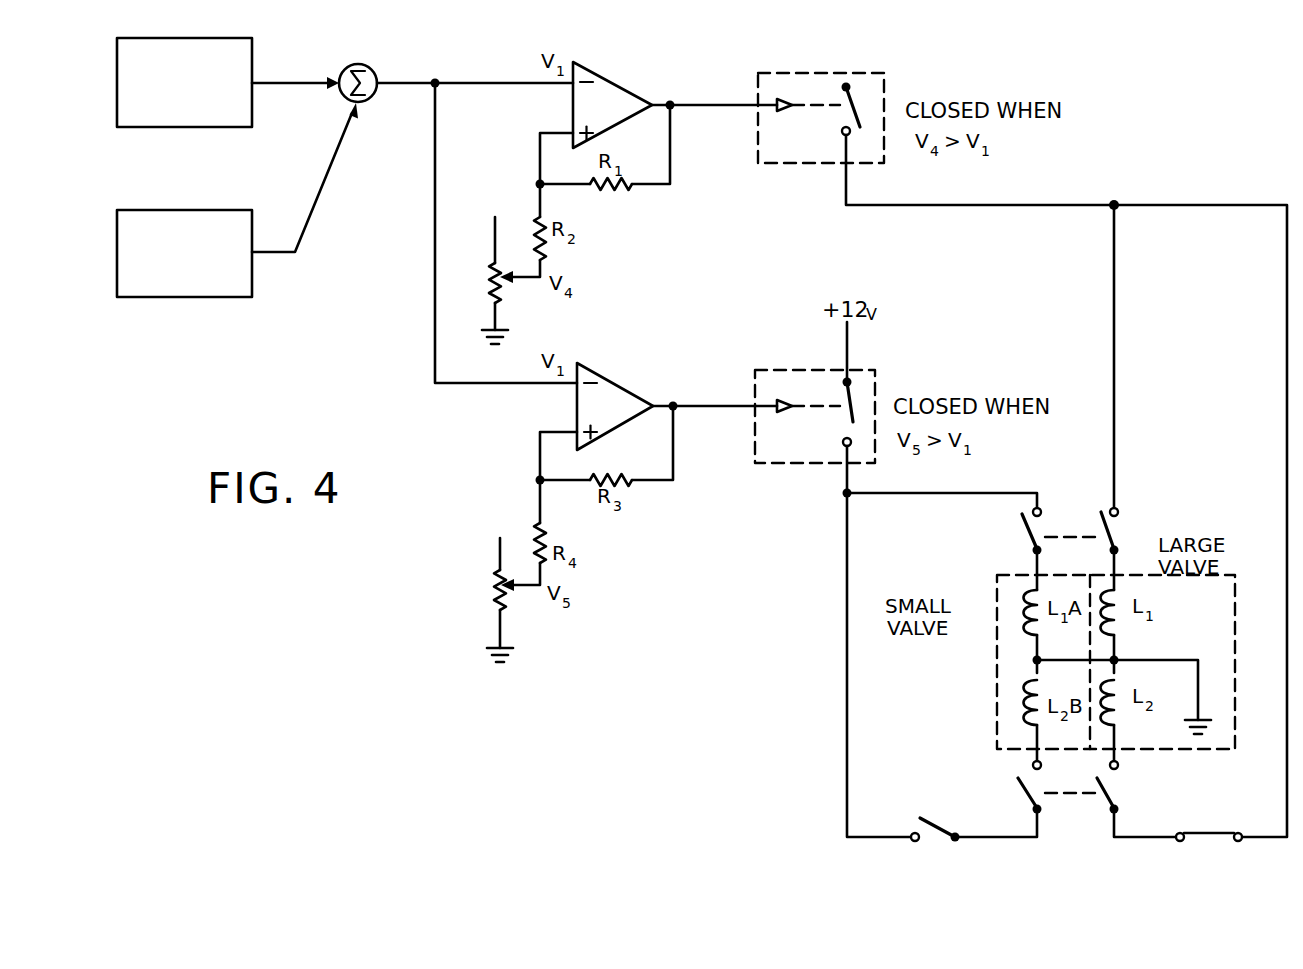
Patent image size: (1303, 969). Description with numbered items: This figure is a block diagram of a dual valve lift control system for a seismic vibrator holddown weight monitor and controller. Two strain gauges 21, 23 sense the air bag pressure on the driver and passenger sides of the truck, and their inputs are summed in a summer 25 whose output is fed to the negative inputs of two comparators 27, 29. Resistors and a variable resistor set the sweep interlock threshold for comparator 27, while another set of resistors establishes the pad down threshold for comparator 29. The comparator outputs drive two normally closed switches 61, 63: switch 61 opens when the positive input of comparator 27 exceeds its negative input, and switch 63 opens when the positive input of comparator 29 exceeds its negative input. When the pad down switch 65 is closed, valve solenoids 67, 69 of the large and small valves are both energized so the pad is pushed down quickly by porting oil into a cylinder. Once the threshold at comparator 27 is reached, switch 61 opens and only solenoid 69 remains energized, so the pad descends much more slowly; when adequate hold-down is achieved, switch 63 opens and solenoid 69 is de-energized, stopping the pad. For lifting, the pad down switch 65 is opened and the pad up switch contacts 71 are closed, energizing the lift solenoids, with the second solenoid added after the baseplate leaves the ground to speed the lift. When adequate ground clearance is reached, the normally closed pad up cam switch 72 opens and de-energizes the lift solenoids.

The strain gauge 21 is at (199, 93).
The strain gauge 23 is at (199, 265).
The summer 25 is at (372, 97).
The comparator 27 is at (621, 88).
The comparator 29 is at (621, 387).
The switch 61 is at (883, 84).
The switch 63 is at (877, 382).
The pad down switch 65 is at (1107, 531).
The valve solenoid 67 is at (1118, 622).
The valve solenoid 69 is at (1025, 605).
The pad up switch contacts 71 is at (1118, 806).
The pad up cam switch 72 is at (934, 822).